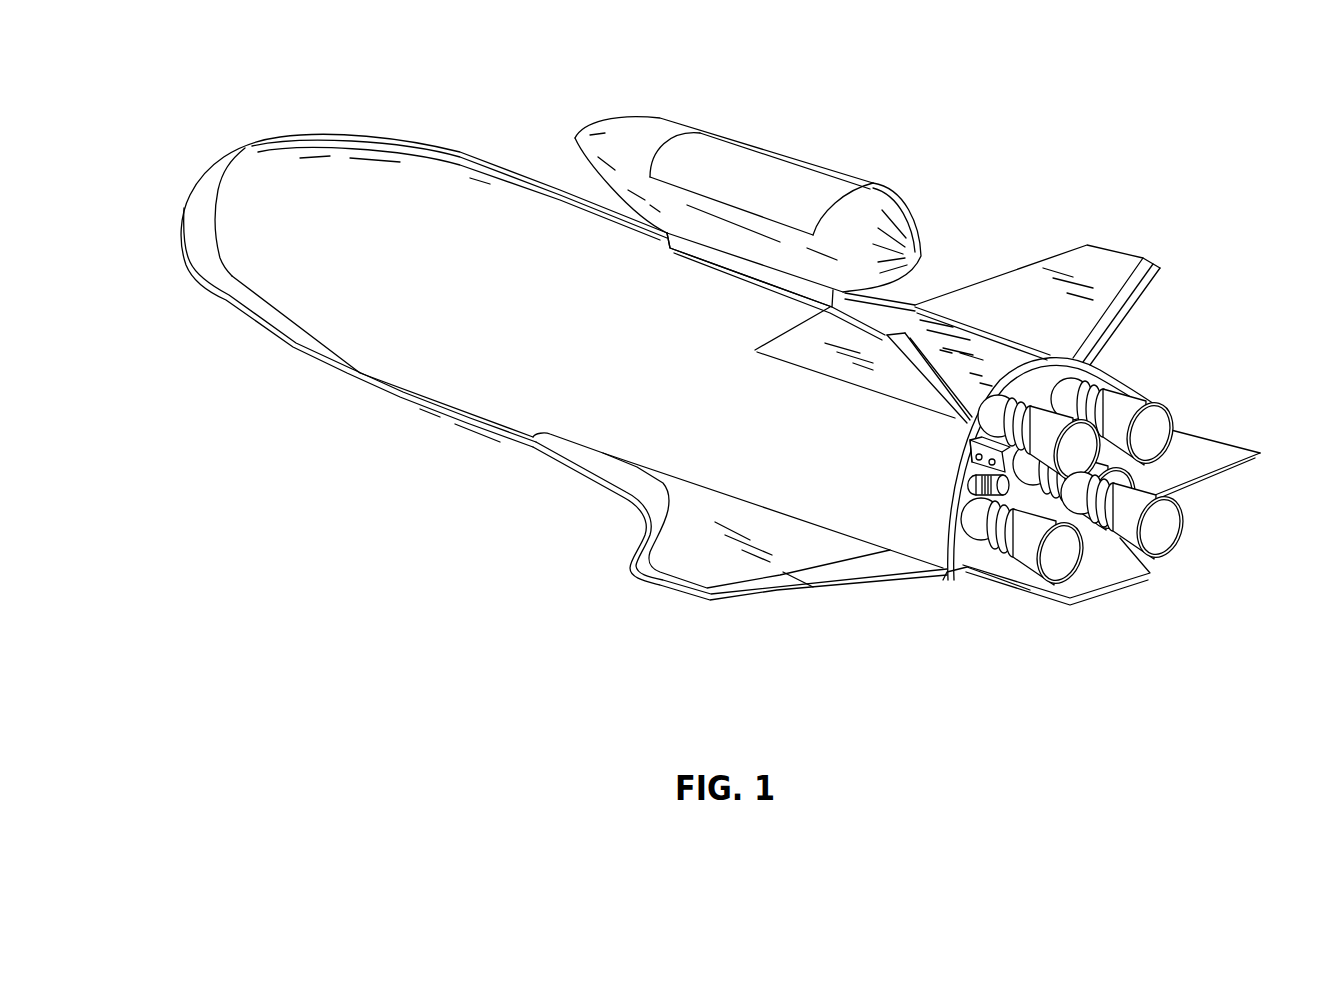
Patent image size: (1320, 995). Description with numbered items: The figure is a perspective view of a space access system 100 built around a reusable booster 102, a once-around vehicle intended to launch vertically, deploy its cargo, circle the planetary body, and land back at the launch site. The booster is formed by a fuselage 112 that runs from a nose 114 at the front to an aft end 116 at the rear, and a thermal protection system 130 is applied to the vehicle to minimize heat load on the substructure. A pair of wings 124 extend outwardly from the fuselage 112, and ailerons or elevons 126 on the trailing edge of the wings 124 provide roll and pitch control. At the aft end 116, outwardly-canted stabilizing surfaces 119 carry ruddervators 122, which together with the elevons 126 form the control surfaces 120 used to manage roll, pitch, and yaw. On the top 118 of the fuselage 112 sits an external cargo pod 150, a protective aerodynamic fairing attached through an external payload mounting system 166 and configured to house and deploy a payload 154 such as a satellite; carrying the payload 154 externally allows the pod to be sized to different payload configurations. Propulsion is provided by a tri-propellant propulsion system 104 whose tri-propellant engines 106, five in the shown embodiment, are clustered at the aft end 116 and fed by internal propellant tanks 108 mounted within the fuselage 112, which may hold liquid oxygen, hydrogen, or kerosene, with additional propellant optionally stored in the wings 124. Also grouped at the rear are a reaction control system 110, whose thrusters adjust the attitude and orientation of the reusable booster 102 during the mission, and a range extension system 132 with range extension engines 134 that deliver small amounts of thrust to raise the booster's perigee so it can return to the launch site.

The space access system 100 is at (460, 150).
The reusable booster 102 is at (348, 140).
The tri-propellant propulsion system 104 is at (1170, 413).
The tri-propellant engines 106 is at (1163, 557).
The internal propellant tanks 108 is at (410, 357).
The reaction control system 110 is at (1112, 386).
The fuselage 112 is at (290, 283).
The nose 114 is at (230, 152).
The aft end 116 is at (937, 540).
The top 118 is at (530, 187).
The stabilizing surfaces 119 is at (1103, 262).
The control surfaces 120 is at (1133, 307).
The ruddervators 122 is at (1158, 287).
The wings 124 is at (1223, 437).
The elevons 126 is at (1207, 463).
The thermal protection system 130 is at (178, 235).
The range extension system 132 is at (1128, 474).
The range extension engines 134 is at (983, 565).
The external cargo pod 150 is at (758, 133).
The payload 154 is at (823, 172).
The external payload mounting system 166 is at (703, 252).